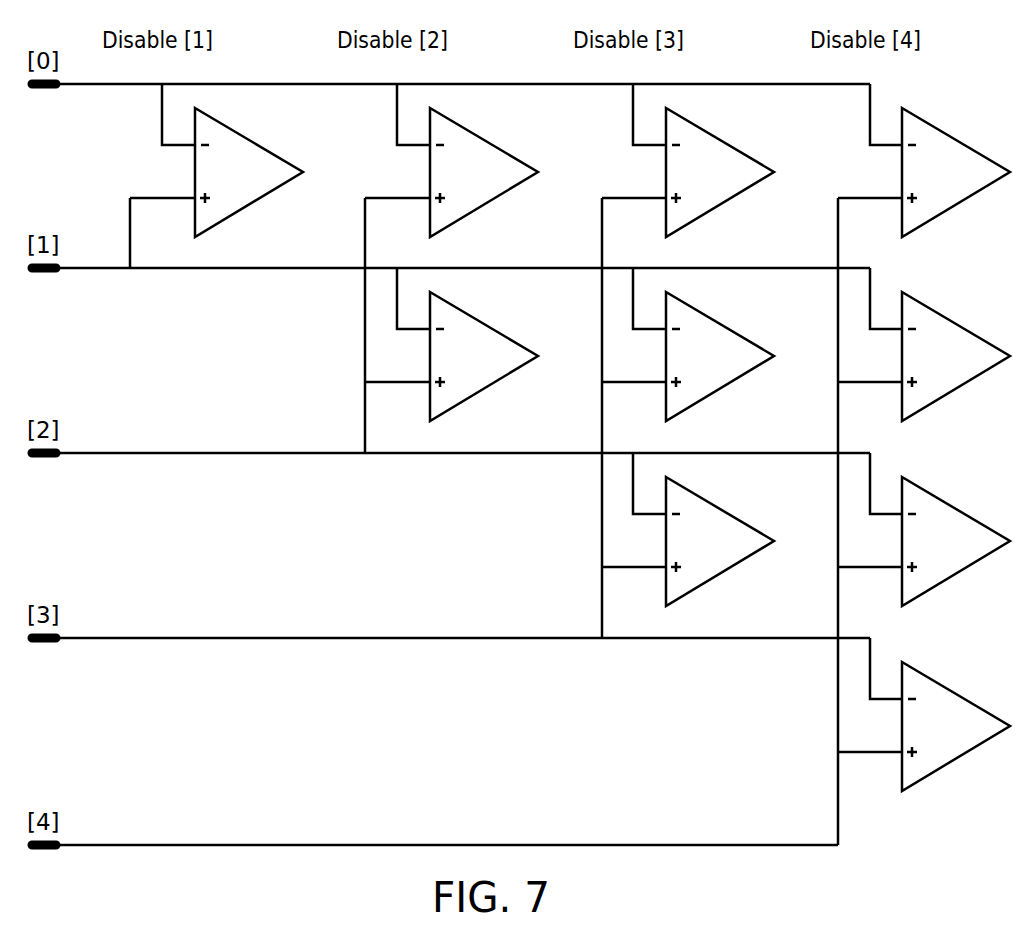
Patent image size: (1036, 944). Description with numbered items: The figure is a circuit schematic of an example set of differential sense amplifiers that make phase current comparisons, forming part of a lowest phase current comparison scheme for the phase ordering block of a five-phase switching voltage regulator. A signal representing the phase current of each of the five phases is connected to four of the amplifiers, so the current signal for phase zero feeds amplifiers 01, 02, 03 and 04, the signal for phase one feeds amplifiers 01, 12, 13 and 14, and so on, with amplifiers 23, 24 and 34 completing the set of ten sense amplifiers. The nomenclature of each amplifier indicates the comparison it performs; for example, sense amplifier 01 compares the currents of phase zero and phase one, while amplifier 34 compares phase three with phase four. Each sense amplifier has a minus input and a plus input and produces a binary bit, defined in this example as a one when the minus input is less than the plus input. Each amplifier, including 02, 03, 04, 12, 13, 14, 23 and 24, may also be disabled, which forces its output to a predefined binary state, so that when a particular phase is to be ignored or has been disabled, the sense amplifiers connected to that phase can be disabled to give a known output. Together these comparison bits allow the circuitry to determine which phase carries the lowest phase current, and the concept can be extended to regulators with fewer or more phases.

The differential sense amplifier 01 is at (216, 160).
The differential sense amplifier 02 is at (451, 160).
The differential sense amplifier 03 is at (688, 160).
The differential sense amplifier 04 is at (924, 160).
The differential sense amplifier 12 is at (451, 344).
The differential sense amplifier 13 is at (688, 344).
The differential sense amplifier 14 is at (924, 344).
The differential sense amplifier 23 is at (688, 529).
The differential sense amplifier 24 is at (924, 529).
The differential sense amplifier 34 is at (924, 714).